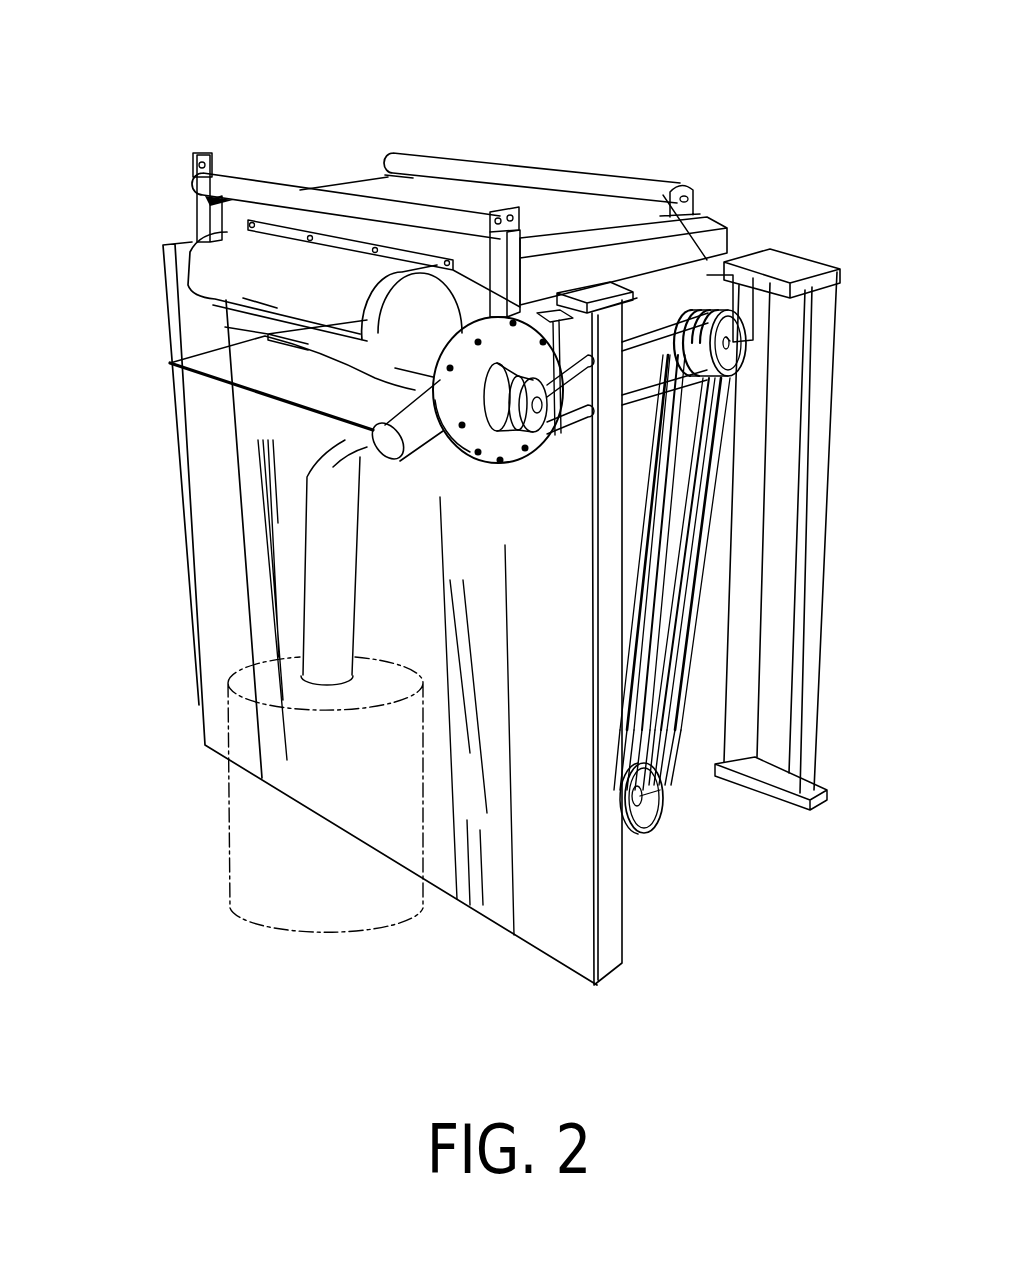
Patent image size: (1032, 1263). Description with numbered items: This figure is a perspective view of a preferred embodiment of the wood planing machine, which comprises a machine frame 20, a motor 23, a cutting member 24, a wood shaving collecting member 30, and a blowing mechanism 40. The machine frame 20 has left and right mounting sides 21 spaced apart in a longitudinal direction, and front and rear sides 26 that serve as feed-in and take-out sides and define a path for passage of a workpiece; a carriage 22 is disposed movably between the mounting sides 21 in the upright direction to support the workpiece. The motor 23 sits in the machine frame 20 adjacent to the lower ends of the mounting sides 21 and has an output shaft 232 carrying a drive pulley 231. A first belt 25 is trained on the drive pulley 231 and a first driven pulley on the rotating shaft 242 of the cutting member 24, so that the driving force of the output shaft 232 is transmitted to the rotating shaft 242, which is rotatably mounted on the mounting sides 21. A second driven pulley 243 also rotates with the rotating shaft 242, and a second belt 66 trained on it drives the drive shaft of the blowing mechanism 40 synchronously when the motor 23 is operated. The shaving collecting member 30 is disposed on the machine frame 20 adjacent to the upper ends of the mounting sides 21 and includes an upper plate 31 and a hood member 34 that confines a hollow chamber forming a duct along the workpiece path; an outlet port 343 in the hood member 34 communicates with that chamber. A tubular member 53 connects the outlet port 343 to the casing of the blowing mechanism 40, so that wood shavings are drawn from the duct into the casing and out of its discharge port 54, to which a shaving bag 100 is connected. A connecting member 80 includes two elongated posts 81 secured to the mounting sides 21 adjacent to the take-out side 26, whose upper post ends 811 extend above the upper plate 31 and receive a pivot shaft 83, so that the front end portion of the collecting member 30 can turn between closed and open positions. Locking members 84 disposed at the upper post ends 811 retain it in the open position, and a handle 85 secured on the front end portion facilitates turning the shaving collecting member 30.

The machine frame 20 is at (193, 559).
The mounting sides 21 is at (835, 352).
The carriage 22 is at (170, 363).
The motor 23 is at (706, 846).
The drive pulley 231 is at (643, 827).
The output shaft 232 is at (640, 818).
The cutting member 24 is at (795, 246).
The rotating shaft 242 is at (731, 343).
The second driven pulley 243 is at (727, 338).
The first belt 25 is at (695, 583).
The front and rear sides 26 is at (827, 537).
The wood shaving collecting member 30 is at (350, 174).
The upper plate 31 is at (373, 175).
The hood member 34 is at (275, 314).
The outlet port 343 is at (373, 340).
The blowing mechanism 40 is at (523, 470).
The tubular member 53 is at (440, 366).
The discharge port 54 is at (400, 360).
The second belt 66 is at (628, 396).
The connecting member 80 is at (409, 168).
The elongated posts 81 is at (200, 217).
The upper post ends 811 is at (520, 203).
The pivot shaft 83 is at (438, 217).
The locking members 84 is at (185, 150).
The handle 85 is at (508, 160).
The shaving bag 100 is at (227, 838).